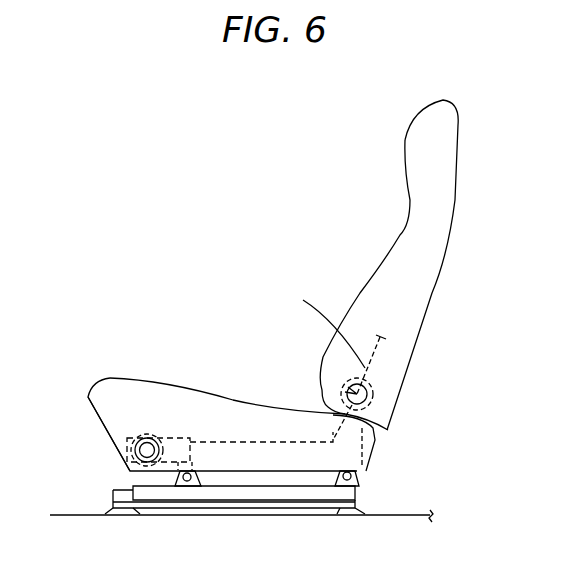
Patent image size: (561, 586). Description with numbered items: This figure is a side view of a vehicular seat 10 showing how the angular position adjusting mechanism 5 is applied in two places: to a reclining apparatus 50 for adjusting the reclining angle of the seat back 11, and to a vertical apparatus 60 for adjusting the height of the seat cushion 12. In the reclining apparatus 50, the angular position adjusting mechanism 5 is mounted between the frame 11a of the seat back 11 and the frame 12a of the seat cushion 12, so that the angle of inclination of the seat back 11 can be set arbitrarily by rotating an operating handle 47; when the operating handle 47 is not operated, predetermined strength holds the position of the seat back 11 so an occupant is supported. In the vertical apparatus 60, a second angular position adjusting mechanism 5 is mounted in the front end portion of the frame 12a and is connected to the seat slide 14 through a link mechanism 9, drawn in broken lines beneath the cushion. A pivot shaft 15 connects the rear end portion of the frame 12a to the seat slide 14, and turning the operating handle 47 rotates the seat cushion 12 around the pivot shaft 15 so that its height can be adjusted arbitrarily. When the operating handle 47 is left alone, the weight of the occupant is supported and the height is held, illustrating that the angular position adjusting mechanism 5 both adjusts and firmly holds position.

The vehicular seat 10 is at (222, 293).
The seat back 11 is at (368, 278).
The frame of the seat back 11a is at (316, 327).
The seat cushion 12 is at (103, 383).
The frame of the seat cushion 12a is at (378, 440).
The seat slide 14 is at (365, 488).
The pivot shaft 15 is at (360, 474).
The operating handle 47 is at (141, 437).
The angular position adjusting mechanism 5 is at (154, 432).
The link mechanism 9 is at (180, 440).
The reclining apparatus 50 is at (383, 386).
The vertical apparatus 60 is at (112, 457).